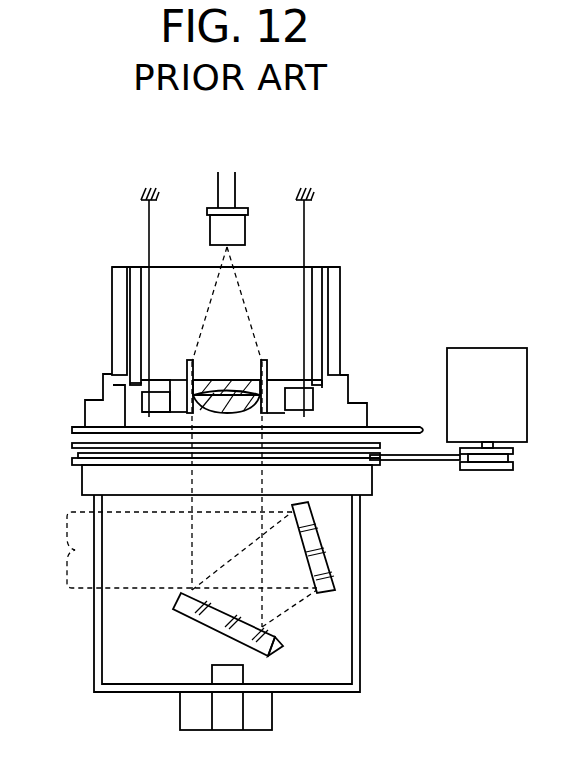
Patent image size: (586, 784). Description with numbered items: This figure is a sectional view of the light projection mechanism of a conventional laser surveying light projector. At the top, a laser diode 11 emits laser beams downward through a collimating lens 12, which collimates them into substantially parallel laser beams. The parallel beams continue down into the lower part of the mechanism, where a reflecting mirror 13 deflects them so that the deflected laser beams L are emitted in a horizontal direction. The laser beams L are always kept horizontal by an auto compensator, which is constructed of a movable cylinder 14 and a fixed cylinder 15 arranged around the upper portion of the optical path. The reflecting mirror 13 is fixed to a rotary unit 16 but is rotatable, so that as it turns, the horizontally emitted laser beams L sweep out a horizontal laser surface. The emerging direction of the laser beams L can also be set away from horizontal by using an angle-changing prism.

The laser diode 11 is at (248, 228).
The collimating lens 12 is at (205, 388).
The reflecting mirror 13 is at (283, 646).
The movable cylinder 14 is at (313, 289).
The fixed cylinder 15 is at (332, 322).
The rotary unit 16 is at (352, 612).
The laser beams L is at (72, 548).